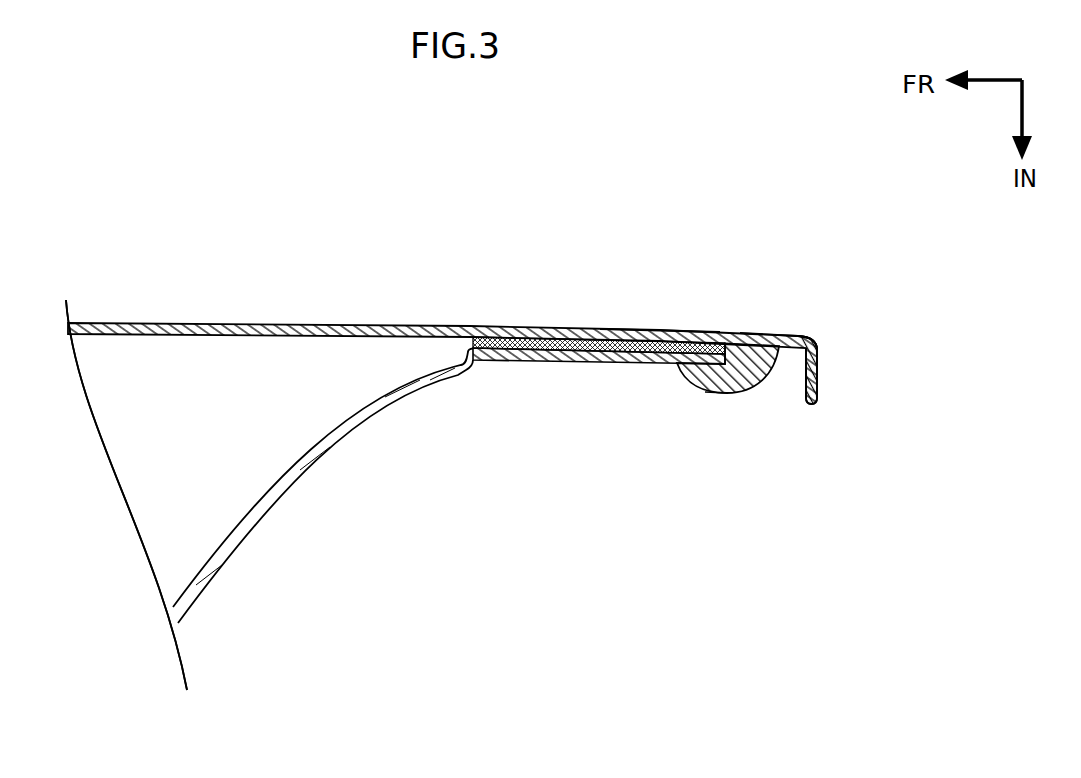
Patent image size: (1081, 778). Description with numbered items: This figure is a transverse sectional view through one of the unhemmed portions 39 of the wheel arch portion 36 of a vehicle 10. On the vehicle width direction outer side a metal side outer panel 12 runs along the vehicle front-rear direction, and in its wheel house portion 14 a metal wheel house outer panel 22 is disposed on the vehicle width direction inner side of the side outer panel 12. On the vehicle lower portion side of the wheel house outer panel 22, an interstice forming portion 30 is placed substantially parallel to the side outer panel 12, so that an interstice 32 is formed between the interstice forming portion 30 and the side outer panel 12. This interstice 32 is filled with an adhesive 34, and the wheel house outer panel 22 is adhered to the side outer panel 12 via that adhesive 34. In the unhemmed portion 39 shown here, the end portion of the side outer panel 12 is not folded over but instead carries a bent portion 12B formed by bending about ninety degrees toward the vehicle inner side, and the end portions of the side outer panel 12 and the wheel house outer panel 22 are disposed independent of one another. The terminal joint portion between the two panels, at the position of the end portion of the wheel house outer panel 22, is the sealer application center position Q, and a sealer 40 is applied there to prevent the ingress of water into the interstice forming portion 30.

The vehicle 10 is at (837, 226).
The side outer panel 12 is at (515, 323).
The bent portion 12B is at (813, 378).
The wheel house portion 14 is at (789, 320).
The wheel house outer panel 22 is at (512, 370).
The interstice forming portion 30 is at (590, 364).
The interstice 32 is at (572, 337).
The adhesive 34 is at (660, 337).
The wheel arch portion 36 is at (807, 327).
The unhemmed portion 39 is at (775, 417).
The sealer 40 is at (750, 390).
The sealer application center position Q is at (712, 393).